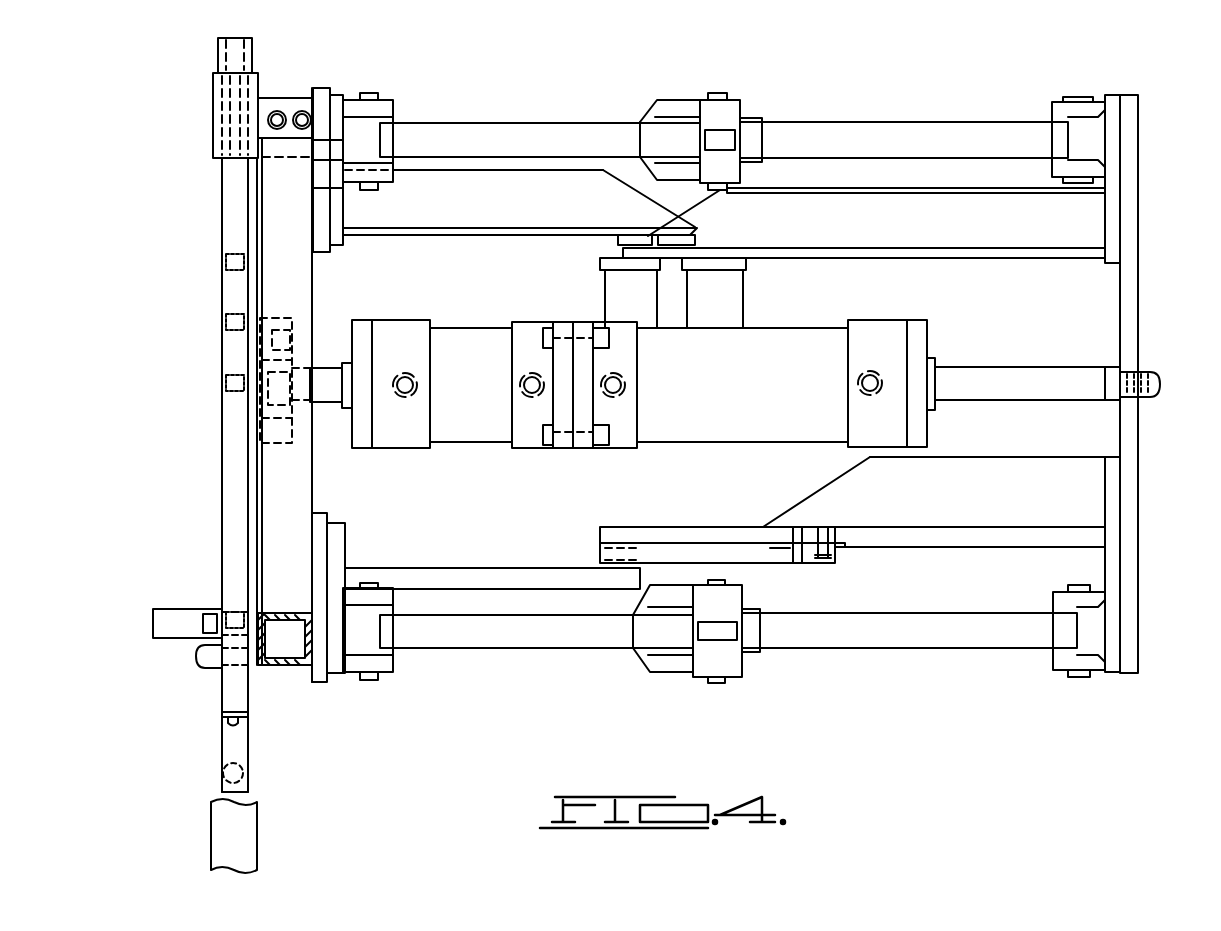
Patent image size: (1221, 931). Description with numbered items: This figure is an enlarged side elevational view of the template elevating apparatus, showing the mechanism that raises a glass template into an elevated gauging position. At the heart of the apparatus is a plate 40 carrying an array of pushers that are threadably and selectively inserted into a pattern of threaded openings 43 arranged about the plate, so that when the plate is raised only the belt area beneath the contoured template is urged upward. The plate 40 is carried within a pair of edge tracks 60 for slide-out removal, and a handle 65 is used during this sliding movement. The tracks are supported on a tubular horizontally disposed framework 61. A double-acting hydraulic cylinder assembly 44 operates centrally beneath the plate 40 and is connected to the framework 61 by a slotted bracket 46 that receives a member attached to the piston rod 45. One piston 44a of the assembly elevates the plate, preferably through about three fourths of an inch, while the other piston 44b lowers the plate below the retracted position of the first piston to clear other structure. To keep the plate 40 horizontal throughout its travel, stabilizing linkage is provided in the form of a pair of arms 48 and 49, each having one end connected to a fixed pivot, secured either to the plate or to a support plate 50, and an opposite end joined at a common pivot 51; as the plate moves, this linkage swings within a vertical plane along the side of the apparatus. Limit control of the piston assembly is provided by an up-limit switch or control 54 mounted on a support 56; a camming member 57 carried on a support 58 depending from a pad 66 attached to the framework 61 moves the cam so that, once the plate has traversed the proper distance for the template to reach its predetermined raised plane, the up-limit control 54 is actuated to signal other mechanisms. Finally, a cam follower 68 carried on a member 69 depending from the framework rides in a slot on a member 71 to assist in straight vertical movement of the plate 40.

The plate 40 is at (222, 446).
The threaded openings 43 is at (224, 264).
The double-acting hydraulic cylinder assembly 44 is at (686, 447).
The piston 44a is at (445, 330).
The piston 44b is at (805, 330).
The piston rod 45 is at (325, 372).
The slotted bracket 46 is at (272, 318).
The arm 48 is at (505, 130).
The arm 49 is at (910, 130).
The support plate 50 is at (1130, 558).
The common pivot 51 is at (717, 93).
The up-limit switch or control 54 is at (620, 250).
The support 56 is at (957, 233).
The camming member 57 is at (627, 228).
The support 58 is at (505, 212).
The edge tracks 60 is at (258, 88).
The tubular horizontally disposed framework 61 is at (285, 175).
The handle 65 is at (223, 771).
The pad 66 is at (328, 520).
The cam follower 68 is at (600, 548).
The member 69 is at (483, 568).
The member 71 is at (943, 535).